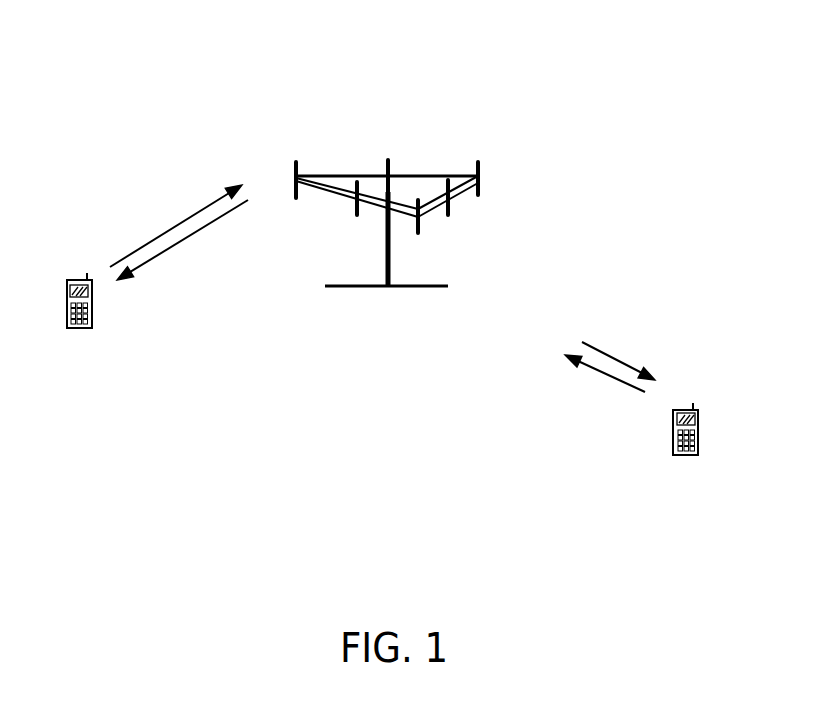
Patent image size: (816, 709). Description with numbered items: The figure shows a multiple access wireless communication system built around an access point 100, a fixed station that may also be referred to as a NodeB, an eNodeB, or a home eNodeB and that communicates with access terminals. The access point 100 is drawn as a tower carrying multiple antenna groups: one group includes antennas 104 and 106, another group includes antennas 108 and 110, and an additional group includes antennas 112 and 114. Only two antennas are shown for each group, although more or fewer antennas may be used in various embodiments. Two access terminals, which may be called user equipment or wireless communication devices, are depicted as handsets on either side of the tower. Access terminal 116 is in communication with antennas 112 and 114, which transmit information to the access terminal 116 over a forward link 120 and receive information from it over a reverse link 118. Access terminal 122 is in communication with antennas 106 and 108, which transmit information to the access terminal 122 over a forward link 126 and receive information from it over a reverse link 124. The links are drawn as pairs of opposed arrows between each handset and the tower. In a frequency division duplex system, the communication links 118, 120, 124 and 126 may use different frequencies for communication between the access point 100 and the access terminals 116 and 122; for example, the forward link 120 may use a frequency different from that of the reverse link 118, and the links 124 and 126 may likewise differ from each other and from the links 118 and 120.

The access point 100 is at (367, 287).
The antenna 104 is at (418, 233).
The antenna 106 is at (448, 215).
The antenna 108 is at (478, 195).
The antenna 110 is at (390, 160).
The antenna 112 is at (297, 173).
The antenna 114 is at (357, 215).
The access terminal 116 is at (77, 280).
The reverse link 118 is at (175, 223).
The forward link 120 is at (190, 235).
The access terminal 122 is at (685, 407).
The reverse link 124 is at (597, 370).
The forward link 126 is at (622, 363).